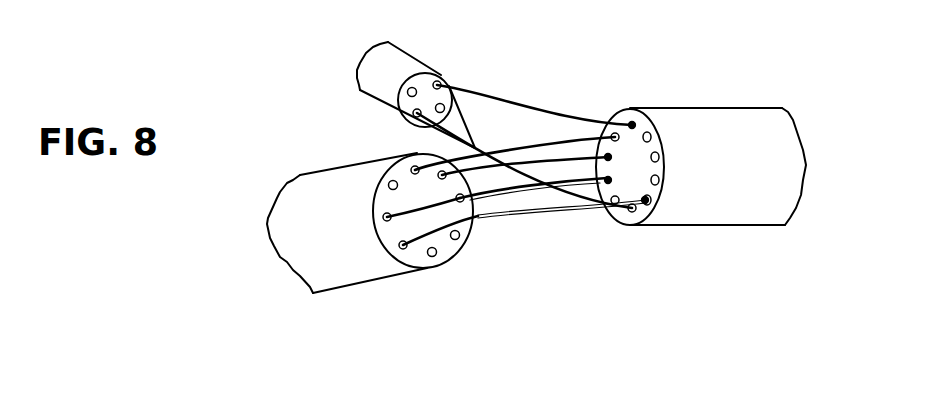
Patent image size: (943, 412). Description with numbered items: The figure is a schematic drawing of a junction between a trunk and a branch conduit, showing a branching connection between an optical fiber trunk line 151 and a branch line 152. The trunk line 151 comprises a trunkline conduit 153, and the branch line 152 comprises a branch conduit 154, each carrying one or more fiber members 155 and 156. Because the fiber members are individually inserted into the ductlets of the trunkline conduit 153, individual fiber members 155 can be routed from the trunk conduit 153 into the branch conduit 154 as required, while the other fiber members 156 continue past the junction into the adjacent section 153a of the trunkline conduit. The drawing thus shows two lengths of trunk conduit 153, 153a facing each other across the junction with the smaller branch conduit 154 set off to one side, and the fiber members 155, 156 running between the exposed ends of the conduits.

The optical fiber trunk line 151 is at (507, 195).
The branch line 152 is at (368, 81).
The trunkline conduit 153 is at (738, 135).
The adjacent section of the trunkline conduit 153a is at (335, 247).
The branch conduit 154 is at (377, 80).
The fiber members 155 is at (466, 140).
The fiber members 156 is at (502, 196).